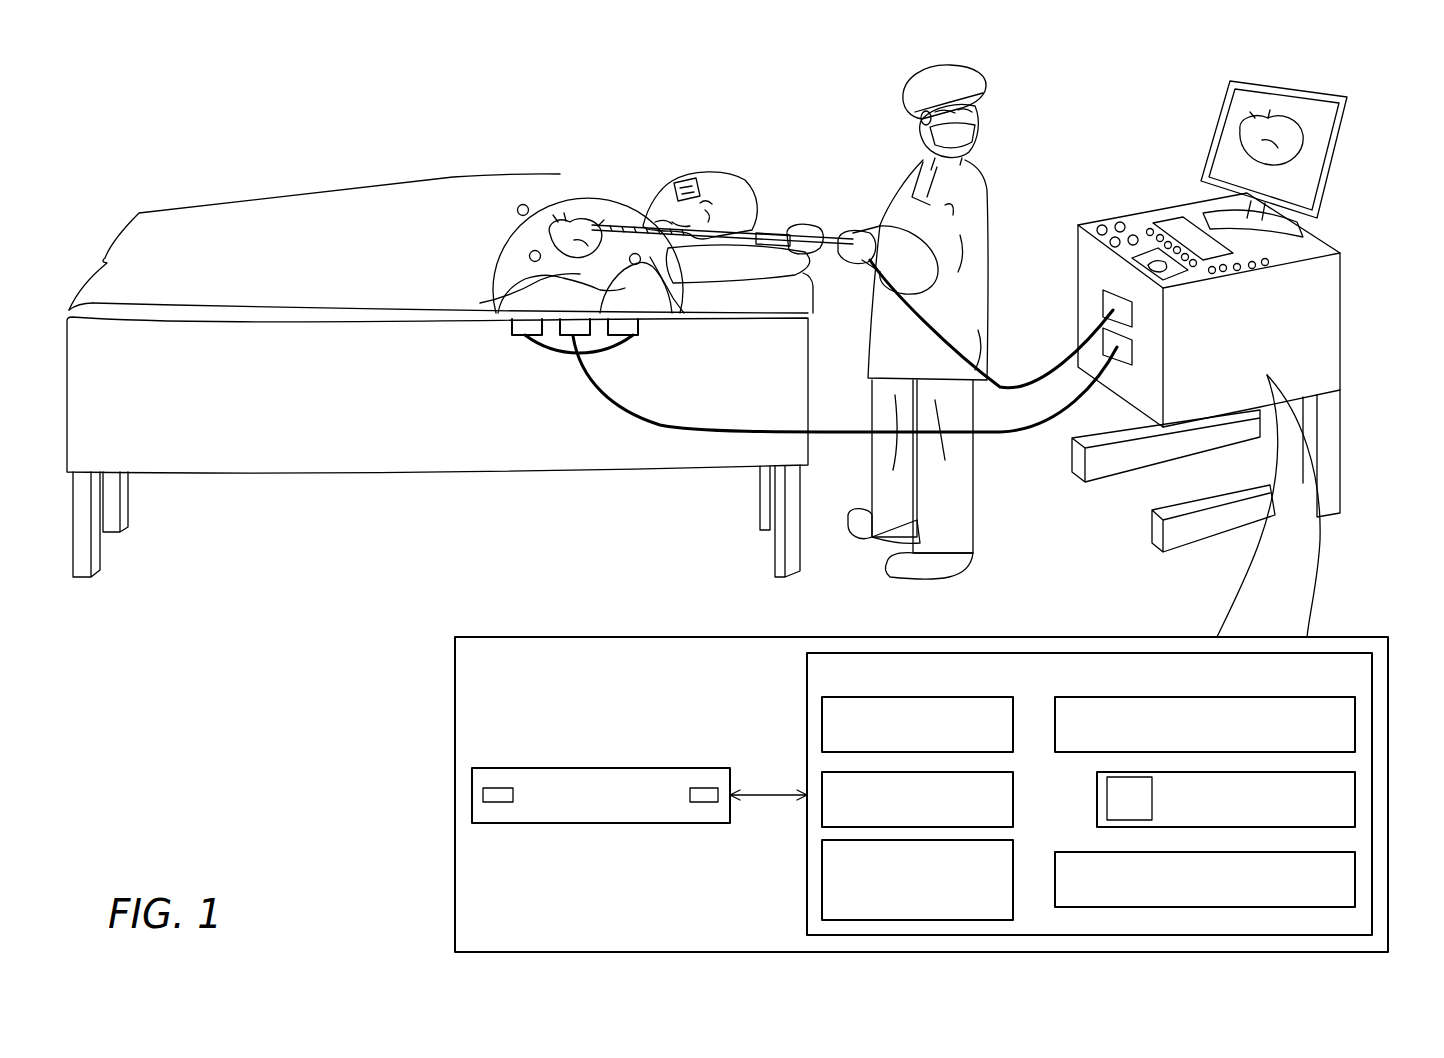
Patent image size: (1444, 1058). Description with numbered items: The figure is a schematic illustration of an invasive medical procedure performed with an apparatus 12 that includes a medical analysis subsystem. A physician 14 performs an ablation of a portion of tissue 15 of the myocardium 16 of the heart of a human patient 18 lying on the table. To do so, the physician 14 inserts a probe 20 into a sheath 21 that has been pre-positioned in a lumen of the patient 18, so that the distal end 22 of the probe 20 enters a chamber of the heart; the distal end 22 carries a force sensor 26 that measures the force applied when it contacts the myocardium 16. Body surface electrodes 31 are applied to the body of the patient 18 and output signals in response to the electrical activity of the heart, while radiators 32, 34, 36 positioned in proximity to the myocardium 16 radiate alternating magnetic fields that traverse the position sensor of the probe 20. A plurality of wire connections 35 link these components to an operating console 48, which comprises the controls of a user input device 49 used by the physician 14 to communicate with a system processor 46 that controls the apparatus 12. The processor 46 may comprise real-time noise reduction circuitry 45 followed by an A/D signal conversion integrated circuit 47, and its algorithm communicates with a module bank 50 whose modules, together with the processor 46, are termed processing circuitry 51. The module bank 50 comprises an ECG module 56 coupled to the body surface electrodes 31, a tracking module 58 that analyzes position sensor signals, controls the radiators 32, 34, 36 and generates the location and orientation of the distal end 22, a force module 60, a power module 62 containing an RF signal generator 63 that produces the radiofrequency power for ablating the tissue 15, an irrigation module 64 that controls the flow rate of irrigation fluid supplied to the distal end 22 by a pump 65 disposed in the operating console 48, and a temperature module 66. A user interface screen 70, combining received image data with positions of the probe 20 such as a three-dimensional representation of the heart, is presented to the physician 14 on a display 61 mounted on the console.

The apparatus 12 is at (1088, 98).
The physician 14 is at (903, 100).
The tissue 15 is at (565, 138).
The myocardium 16 is at (583, 217).
The patient 18 is at (377, 195).
The probe 20 is at (763, 233).
The sheath 21 is at (628, 210).
The distal end 22 is at (688, 180).
The force sensor 26 is at (740, 173).
The body surface electrodes 31 is at (523, 204).
The radiator 32 is at (512, 326).
The radiator 34 is at (560, 346).
The wire connections 35 is at (500, 298).
The radiator 36 is at (640, 342).
The real-time noise reduction circuitry 45 is at (498, 788).
The system processor 46 is at (605, 768).
The A/D signal conversion integrated circuit 47 is at (703, 788).
The operating console 48 is at (1206, 329).
The user input device 49 is at (1090, 223).
The module bank 50 is at (558, 637).
The processing circuitry 51 is at (1376, 607).
The electrocardiograph (ECG) module 56 is at (822, 718).
The tracking module 58 is at (1355, 722).
The force module 60 is at (822, 820).
The display 61 is at (1300, 159).
The power module 62 is at (1355, 797).
The radiofrequency (RF) signal generator 63 is at (1097, 797).
The irrigation module 64 is at (822, 872).
The pump 65 is at (1134, 210).
The temperature module 66 is at (1355, 877).
The user interface screen 70 is at (1288, 126).